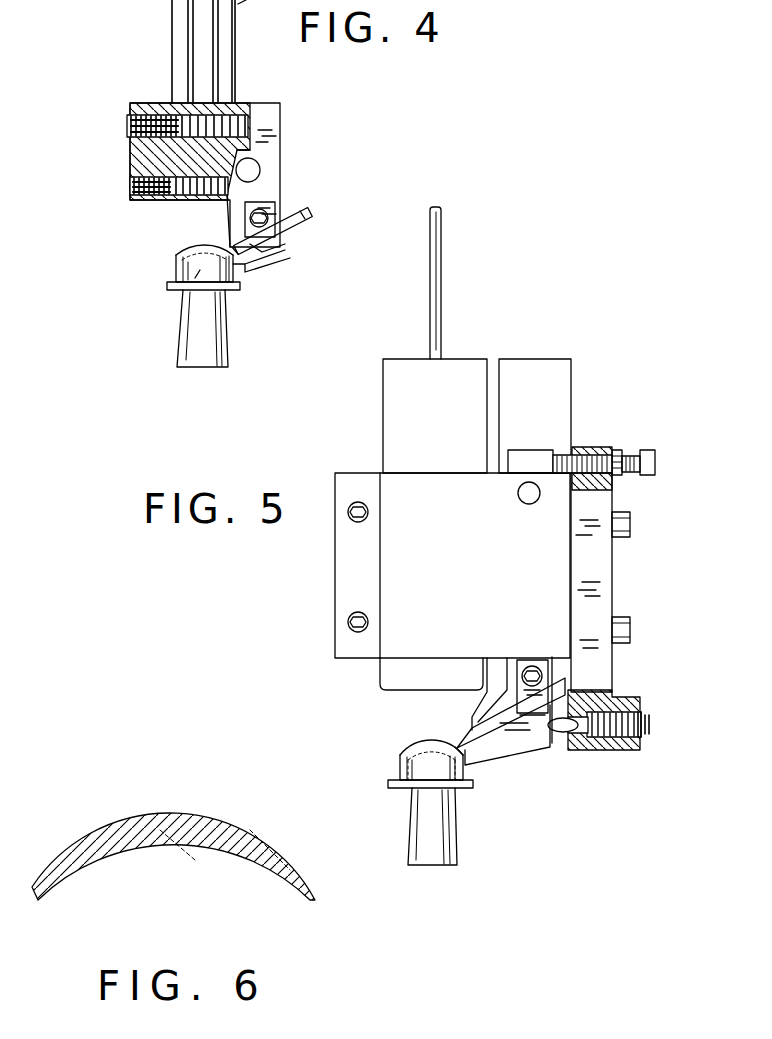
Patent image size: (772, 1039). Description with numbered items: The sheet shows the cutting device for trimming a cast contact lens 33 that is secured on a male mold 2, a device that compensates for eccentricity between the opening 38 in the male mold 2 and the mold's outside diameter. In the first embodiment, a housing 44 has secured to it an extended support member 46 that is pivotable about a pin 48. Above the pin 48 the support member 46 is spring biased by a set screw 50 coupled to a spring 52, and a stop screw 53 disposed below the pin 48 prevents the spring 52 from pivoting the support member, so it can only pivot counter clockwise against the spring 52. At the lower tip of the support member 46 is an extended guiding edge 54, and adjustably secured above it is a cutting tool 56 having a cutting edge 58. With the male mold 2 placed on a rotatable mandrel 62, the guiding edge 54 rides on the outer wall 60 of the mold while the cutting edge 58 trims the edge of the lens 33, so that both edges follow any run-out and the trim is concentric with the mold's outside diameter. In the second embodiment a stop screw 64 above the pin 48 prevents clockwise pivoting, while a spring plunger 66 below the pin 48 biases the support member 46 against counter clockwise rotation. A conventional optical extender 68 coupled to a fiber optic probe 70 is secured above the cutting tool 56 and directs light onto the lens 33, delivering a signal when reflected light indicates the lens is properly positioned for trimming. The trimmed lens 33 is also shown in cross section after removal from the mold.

In FIG. 4, the male mold 2 is at (170, 260).
In FIG. 5, the male mold 2 is at (398, 758).
In FIG. 4, the cast lens 33 is at (195, 250).
In FIG. 5, the cast lens 33 is at (420, 745).
In FIG. 6, the cast lens 33 is at (192, 812).
In FIG. 4, the opening 38 is at (200, 283).
In FIG. 4, the housing 44 is at (216, 90).
In FIG. 5, the housing 44 is at (568, 357).
In FIG. 4, the support member 46 is at (268, 125).
In FIG. 5, the support member 46 is at (533, 462).
In FIG. 4, the pin 48 is at (256, 172).
In FIG. 5, the pin 48 is at (522, 497).
In FIG. 4, the set screw 50 is at (128, 125).
In FIG. 4, the spring 52 is at (178, 120).
In FIG. 4, the stop screw 53 is at (182, 196).
In FIG. 4, the guiding edge 54 is at (266, 270).
In FIG. 5, the guiding edge 54 is at (468, 764).
In FIG. 4, the cutting tool 56 is at (306, 212).
In FIG. 5, the cutting tool 56 is at (472, 732).
In FIG. 4, the cutting edge 58 is at (232, 248).
In FIG. 5, the cutting edge 58 is at (455, 748).
In FIG. 4, the wall 60 is at (167, 280).
In FIG. 5, the wall 60 is at (398, 776).
In FIG. 4, the rotatable mandrel 62 is at (218, 322).
In FIG. 5, the rotatable mandrel 62 is at (450, 818).
In FIG. 5, the stop screw 64 is at (620, 476).
In FIG. 5, the spring plunger 66 is at (650, 726).
In FIG. 5, the optical extender 68 is at (383, 418).
In FIG. 5, the fiber optic probe 70 is at (430, 315).